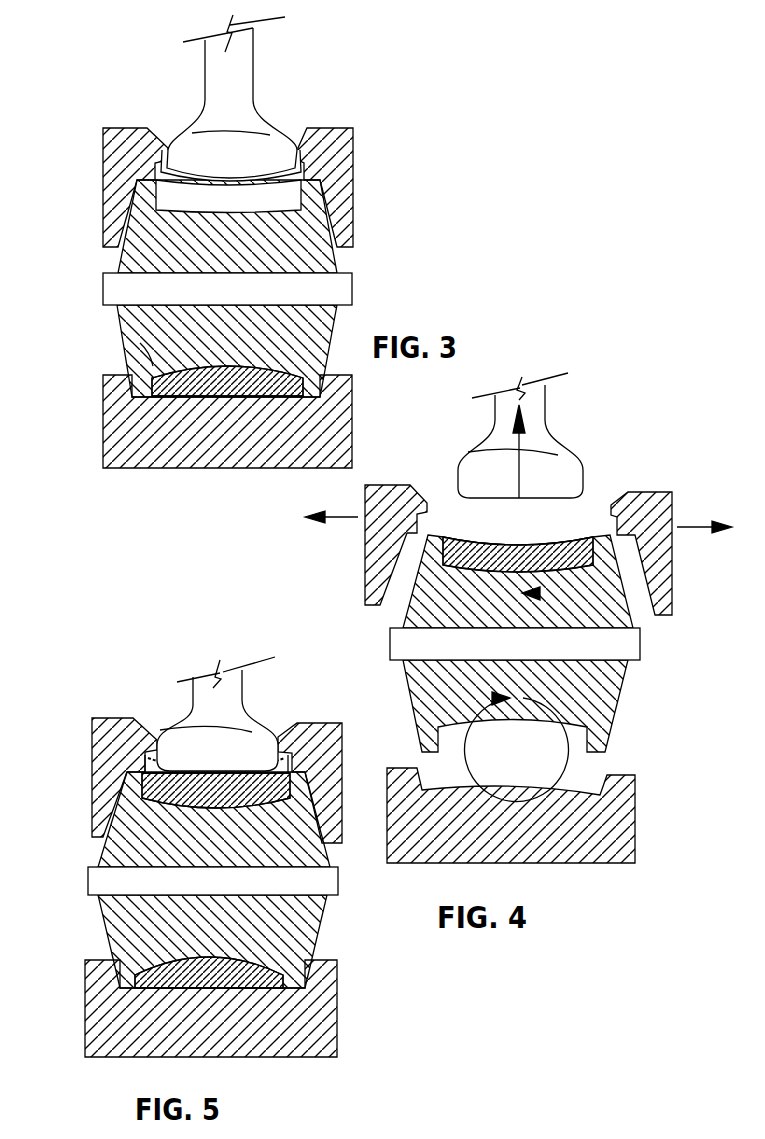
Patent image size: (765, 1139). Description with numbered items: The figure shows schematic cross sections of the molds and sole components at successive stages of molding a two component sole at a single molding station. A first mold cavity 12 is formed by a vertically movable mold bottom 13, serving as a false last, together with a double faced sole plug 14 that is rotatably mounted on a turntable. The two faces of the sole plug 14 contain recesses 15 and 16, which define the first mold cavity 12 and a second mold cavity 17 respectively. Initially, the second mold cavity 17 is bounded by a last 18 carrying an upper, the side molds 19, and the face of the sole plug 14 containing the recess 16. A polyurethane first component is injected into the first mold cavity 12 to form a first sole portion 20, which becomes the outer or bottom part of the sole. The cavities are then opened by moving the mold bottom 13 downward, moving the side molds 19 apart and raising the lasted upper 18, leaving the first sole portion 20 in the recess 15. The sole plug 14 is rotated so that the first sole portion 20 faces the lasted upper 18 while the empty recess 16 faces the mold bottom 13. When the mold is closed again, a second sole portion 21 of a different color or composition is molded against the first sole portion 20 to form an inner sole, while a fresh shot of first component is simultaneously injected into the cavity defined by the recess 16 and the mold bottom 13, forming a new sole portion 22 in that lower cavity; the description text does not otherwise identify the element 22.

In FIG. 3, the first mold cavity 12 is at (130, 365).
In FIG. 3, the mold bottom 13 is at (337, 443).
In FIG. 4, the mold bottom 13 is at (603, 863).
In FIG. 5, the mold bottom 13 is at (322, 1053).
In FIG. 3, the sole plug 14 is at (325, 327).
In FIG. 4, the sole plug 14 is at (610, 710).
In FIG. 5, the sole plug 14 is at (312, 927).
In FIG. 3, the recess 15 is at (140, 343).
In FIG. 4, the recess 15 is at (413, 613).
In FIG. 5, the recess 15 is at (333, 873).
In FIG. 3, the recess 16 is at (173, 217).
In FIG. 4, the recess 16 is at (480, 727).
In FIG. 3, the second mold cavity 17 is at (162, 150).
In FIG. 5, the second mold cavity 17 is at (158, 735).
In FIG. 3, the last 18 is at (248, 72).
In FIG. 4, the last 18 is at (535, 413).
In FIG. 5, the last 18 is at (230, 703).
In FIG. 3, the side molds 19 is at (112, 192).
In FIG. 4, the side molds 19 is at (372, 578).
In FIG. 5, the side molds 19 is at (92, 767).
In FIG. 3, the first sole portion 20 is at (293, 382).
In FIG. 4, the first sole portion 20 is at (558, 552).
In FIG. 5, the first sole portion 20 is at (157, 797).
In FIG. 5, the second sole portion 21 is at (287, 750).
In FIG. 5, the lower insert 22 is at (137, 992).